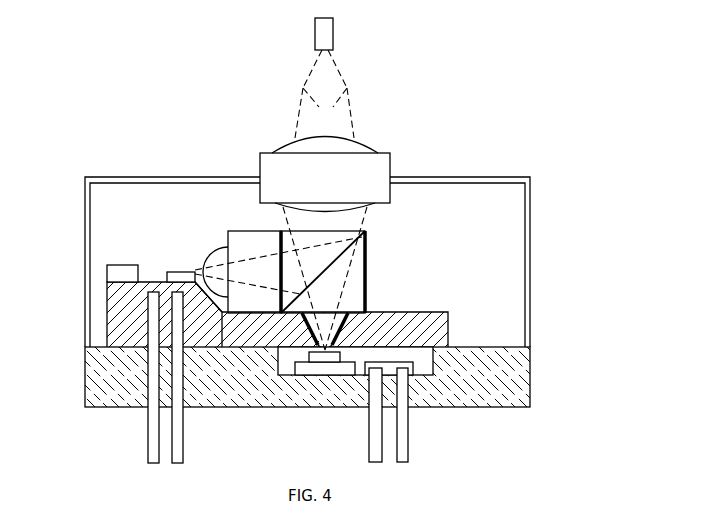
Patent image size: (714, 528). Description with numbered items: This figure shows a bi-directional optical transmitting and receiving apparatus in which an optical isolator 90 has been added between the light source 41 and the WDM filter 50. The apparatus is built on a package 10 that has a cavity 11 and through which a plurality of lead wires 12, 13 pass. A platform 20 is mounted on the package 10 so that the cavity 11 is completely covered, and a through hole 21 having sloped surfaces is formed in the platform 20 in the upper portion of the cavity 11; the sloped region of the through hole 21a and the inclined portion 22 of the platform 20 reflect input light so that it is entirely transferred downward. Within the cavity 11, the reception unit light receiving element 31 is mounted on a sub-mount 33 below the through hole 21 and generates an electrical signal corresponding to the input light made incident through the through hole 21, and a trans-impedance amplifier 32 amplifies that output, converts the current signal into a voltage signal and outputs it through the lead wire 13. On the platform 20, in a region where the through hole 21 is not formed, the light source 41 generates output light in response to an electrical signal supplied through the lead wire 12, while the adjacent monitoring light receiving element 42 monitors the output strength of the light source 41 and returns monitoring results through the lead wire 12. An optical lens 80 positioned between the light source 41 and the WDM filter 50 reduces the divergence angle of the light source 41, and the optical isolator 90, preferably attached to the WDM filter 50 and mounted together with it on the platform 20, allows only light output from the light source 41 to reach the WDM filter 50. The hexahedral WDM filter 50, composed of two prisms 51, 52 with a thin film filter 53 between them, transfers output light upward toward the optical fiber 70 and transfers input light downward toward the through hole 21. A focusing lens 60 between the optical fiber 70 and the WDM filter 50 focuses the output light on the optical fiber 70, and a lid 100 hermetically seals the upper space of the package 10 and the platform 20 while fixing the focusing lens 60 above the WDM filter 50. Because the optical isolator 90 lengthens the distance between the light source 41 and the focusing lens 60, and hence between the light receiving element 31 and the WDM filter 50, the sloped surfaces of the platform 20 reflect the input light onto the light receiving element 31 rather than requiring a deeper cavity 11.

The package 10 is at (529, 375).
The cavity 11 is at (440, 376).
The lead wire 12 is at (148, 443).
The lead wire 13 is at (403, 437).
The platform 20 is at (105, 302).
The through hole 21 is at (385, 336).
The groove 21a is at (340, 330).
The inclined portion 22 is at (190, 306).
The reception unit light receiving element 31 is at (322, 356).
The trans-impedance amplifier 32 is at (366, 370).
The sub-mount 33 is at (305, 372).
The light source 41 is at (180, 278).
The monitoring light receiving element 42 is at (122, 273).
The wavelength division multiplexing (WDM) filter 50 is at (428, 212).
The prism 51 is at (285, 238).
The prism 52 is at (362, 250).
The thin film filter 53 is at (352, 271).
The focusing lens 60 is at (383, 163).
The optical fiber 70 is at (328, 34).
The optical lens 80 is at (215, 258).
The optical isolator 90 is at (253, 248).
The lid 100 is at (463, 177).